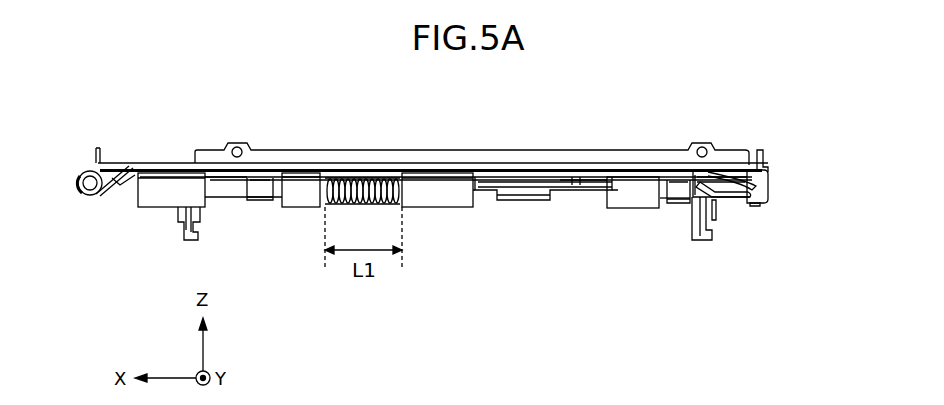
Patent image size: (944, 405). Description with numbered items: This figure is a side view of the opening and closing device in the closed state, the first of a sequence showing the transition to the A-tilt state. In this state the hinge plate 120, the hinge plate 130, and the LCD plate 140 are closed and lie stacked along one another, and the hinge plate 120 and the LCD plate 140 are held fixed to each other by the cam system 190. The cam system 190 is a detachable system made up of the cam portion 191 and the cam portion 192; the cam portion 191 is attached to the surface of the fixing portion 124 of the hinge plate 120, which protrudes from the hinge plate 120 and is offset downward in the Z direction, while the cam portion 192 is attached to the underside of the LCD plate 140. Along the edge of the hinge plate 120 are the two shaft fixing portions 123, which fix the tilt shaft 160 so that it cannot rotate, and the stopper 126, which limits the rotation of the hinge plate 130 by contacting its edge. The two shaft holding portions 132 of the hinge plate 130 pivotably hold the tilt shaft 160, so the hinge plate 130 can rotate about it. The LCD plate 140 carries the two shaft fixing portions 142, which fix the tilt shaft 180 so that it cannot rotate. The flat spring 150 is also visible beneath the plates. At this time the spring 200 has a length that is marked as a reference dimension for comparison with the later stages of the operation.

The hinge plate 120 is at (598, 180).
The shaft fixing portions 123 is at (308, 196).
The fixing portion 124 is at (722, 197).
The stopper 126 is at (261, 194).
The hinge plate 130 is at (385, 170).
The shaft holding portions 132 is at (162, 200).
The LCD plate 140 is at (597, 151).
The shaft fixing portions 142 is at (83, 194).
The flat spring 150 is at (526, 194).
The tilt shaft 160 is at (223, 196).
The tilt shaft 180 is at (105, 192).
The cam system 190 is at (822, 180).
The cam portion 191 is at (757, 182).
The cam portion 192 is at (735, 193).
The spring 200 is at (352, 178).